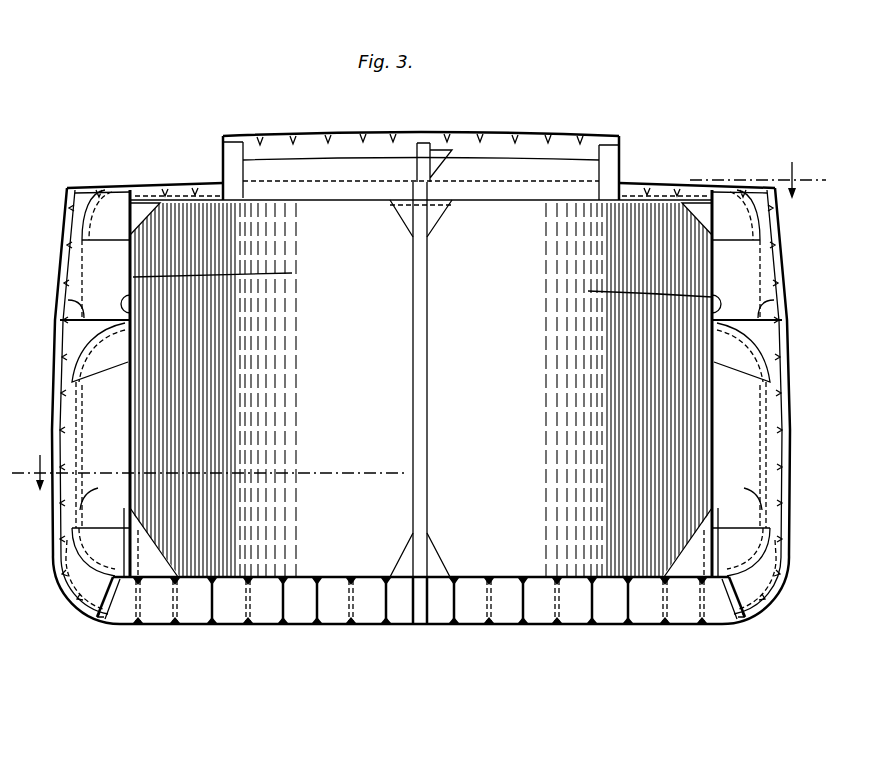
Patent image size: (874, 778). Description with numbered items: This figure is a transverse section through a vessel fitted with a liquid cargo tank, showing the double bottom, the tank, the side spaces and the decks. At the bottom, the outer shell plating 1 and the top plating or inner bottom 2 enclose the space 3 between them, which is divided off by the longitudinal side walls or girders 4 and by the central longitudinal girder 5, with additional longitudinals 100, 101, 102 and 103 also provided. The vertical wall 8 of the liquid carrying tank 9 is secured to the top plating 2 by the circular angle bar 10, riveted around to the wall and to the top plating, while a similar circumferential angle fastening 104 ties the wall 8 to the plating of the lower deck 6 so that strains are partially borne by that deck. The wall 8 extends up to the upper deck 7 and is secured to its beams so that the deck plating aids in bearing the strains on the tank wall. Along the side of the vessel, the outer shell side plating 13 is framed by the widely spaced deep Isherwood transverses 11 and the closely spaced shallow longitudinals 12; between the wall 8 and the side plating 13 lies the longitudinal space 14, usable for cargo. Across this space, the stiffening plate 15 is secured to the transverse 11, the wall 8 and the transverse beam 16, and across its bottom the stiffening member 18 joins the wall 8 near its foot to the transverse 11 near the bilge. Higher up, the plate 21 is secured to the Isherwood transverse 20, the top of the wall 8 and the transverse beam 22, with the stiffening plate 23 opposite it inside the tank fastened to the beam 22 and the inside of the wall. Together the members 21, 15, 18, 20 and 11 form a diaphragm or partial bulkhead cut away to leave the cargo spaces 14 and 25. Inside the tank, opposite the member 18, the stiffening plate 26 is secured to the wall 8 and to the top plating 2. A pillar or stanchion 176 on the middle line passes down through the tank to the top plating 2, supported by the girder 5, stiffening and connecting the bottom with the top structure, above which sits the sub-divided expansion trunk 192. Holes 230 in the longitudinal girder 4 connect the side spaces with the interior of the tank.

The outer shell plating 1 is at (258, 628).
The top plating 2 is at (292, 577).
The space between inner and outer platings 3 is at (330, 603).
The longitudinal side wall or girder 4 is at (113, 618).
The central longitudinal girder 5 is at (452, 658).
The lower deck 6 is at (83, 302).
The upper deck 7 is at (121, 188).
The vertical wall 8 is at (128, 443).
The tank 9 is at (183, 387).
The circular angle bar 10 is at (68, 583).
The Isherwood transverse 11 is at (70, 393).
The shallow longitudinal 12 is at (57, 470).
The outer shell side plating 13 is at (53, 413).
The longitudinal space 14 is at (97, 488).
The stiffening plate 15 is at (97, 356).
The transverse beam 16 is at (115, 318).
The stiffening member 18 is at (100, 545).
The Isherwood transverse 20 is at (78, 258).
The plate or stiffening member 21 is at (103, 222).
The transverse beam 22 is at (178, 196).
The stiffening plate 23 is at (143, 205).
The longitudinal space 25 is at (100, 270).
The stiffening plate 26 is at (160, 557).
The additional longitudinal 100 is at (637, 603).
The additional longitudinal 101 is at (524, 607).
The additional longitudinal 102 is at (315, 606).
The additional longitudinal 103 is at (210, 605).
The circumferential angle fastening 104 is at (292, 273).
The pillar or stanchion 176 is at (428, 368).
The expansion trunk 192 is at (271, 168).
The hole 230 is at (100, 608).